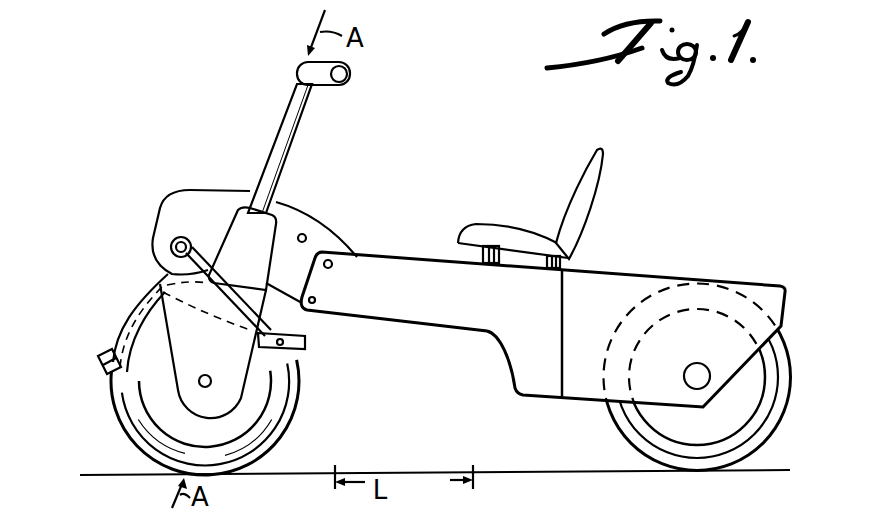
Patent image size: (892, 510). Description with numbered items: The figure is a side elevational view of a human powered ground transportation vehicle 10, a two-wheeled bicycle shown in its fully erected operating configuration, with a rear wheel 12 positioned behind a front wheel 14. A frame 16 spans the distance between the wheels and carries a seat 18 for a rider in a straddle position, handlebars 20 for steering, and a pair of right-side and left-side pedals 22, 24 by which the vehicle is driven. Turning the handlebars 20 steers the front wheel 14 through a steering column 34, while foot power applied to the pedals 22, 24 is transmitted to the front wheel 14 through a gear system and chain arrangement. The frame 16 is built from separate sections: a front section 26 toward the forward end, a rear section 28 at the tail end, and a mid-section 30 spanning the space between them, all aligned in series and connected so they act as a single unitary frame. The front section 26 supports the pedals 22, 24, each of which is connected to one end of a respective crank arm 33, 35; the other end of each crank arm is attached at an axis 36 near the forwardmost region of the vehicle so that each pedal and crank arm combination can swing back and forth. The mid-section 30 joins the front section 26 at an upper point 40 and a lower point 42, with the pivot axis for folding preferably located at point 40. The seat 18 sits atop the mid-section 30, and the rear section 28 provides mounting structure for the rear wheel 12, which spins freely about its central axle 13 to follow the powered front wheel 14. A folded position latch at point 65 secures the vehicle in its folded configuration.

The human powered ground transportation vehicle 10 is at (454, 114).
The rear wheel 12 is at (740, 419).
The central axle 13 is at (698, 364).
The front wheel 14 is at (152, 400).
The frame 16 is at (420, 398).
The seat 18 is at (517, 226).
The handlebars 20 is at (290, 68).
The right-side pedal 22 is at (104, 356).
The left-side pedal 24 is at (303, 351).
The front section 26 is at (232, 182).
The rear section 28 is at (654, 270).
The mid-section 30 is at (466, 333).
The right-side crank arm 33 is at (160, 277).
The steering column 34 is at (297, 151).
The left-side crank arm 35 is at (233, 292).
The axis 36 is at (172, 241).
The upper connection point 40 is at (334, 266).
The lower connection point 42 is at (333, 286).
The folded position latch point 65 is at (309, 237).